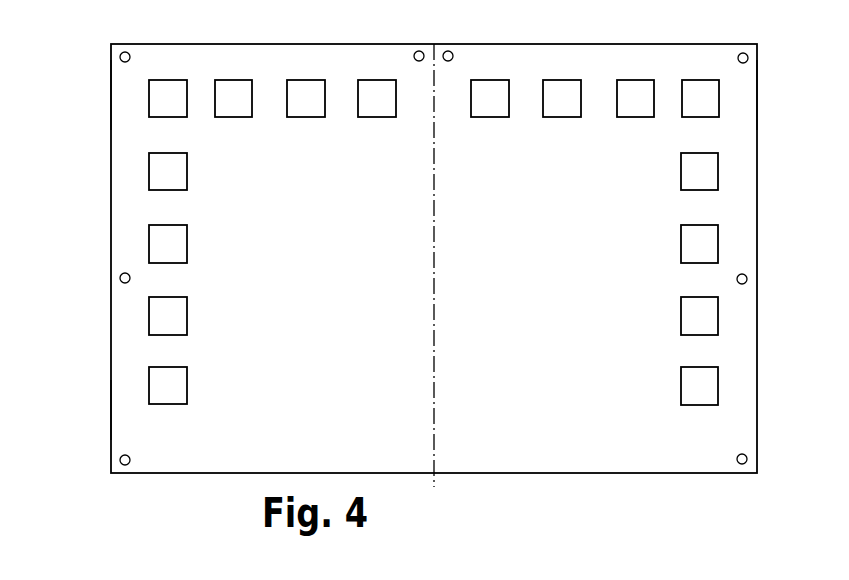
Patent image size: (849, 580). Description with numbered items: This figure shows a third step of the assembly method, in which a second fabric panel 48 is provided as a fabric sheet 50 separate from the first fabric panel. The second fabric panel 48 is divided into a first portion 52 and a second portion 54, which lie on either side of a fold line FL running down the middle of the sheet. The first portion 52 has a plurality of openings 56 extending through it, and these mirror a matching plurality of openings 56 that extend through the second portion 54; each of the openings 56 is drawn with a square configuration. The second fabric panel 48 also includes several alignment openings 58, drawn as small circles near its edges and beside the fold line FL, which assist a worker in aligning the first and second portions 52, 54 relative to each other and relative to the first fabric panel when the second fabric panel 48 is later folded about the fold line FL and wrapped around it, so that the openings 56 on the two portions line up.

The second fabric panel 48 is at (131, 382).
The fabric sheet 50 is at (127, 416).
The first portion 52 is at (119, 94).
The second portion 54 is at (739, 98).
The openings 56 is at (176, 80).
The alignment openings 58 is at (119, 58).
The fold line FL is at (433, 445).